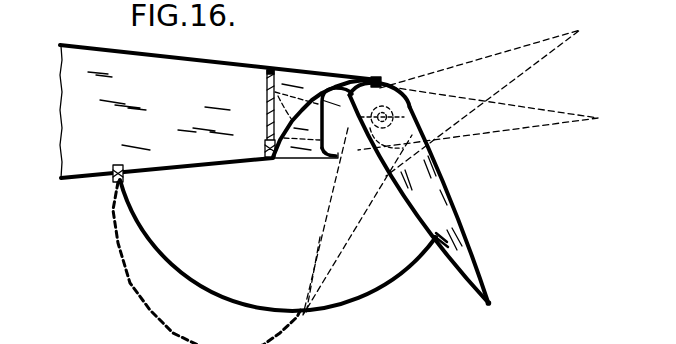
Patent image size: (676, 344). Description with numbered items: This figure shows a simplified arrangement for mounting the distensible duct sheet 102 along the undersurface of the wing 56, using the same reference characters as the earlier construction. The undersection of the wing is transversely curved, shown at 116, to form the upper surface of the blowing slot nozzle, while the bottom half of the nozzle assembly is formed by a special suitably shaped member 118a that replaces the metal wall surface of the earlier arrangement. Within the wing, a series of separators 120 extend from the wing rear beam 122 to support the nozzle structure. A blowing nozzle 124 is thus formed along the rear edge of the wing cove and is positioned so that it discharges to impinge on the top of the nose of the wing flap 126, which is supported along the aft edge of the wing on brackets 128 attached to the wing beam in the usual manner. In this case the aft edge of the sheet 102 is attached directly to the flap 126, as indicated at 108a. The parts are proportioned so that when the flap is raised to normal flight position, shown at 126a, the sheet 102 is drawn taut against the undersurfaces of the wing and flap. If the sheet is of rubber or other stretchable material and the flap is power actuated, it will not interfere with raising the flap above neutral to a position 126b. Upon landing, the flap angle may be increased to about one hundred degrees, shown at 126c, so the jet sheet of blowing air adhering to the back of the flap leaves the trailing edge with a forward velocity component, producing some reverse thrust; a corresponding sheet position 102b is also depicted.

The wing 56 is at (87, 178).
The distensible duct sheet 102 is at (228, 290).
The cover strip in alternate position 102b is at (134, 292).
The attachment of sheet to flap 108a is at (438, 248).
The transversely curved undersection of wing 116 is at (310, 103).
The suitably shaped member 118a is at (337, 96).
The separators 120 is at (281, 118).
The wing rear beam 122 is at (268, 98).
The blowing nozzle 124 is at (381, 84).
The wing flap 126 is at (468, 234).
The flap raised to normal position 126a is at (547, 128).
The flap position above neutral 126b is at (577, 40).
The flap at increased landing angle 126c is at (305, 316).
The brackets 128 is at (268, 86).